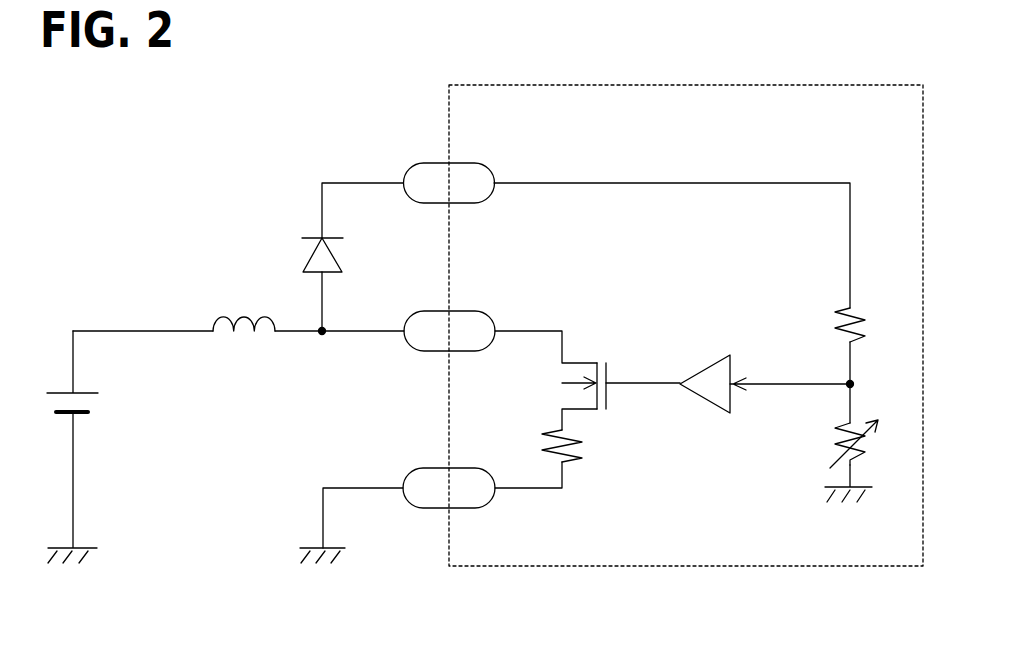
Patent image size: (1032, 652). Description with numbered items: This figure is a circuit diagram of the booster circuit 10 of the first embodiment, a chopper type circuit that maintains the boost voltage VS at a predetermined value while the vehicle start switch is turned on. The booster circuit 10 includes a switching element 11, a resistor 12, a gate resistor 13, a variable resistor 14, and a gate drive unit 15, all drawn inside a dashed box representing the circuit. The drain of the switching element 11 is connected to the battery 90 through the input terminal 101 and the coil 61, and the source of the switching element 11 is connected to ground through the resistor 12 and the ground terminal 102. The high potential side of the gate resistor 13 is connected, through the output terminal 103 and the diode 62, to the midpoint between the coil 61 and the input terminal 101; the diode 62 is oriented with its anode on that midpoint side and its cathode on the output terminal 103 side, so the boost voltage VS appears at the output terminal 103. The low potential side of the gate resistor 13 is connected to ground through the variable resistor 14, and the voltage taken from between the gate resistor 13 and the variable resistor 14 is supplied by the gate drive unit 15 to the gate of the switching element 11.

The booster circuit 10 is at (880, 85).
The switching element 11 is at (590, 362).
The resistor 12 is at (583, 440).
The gate resistor 13 is at (835, 320).
The variable resistor 14 is at (836, 435).
The gate drive unit 15 is at (702, 366).
The coil 61 is at (229, 345).
The diode 62 is at (305, 256).
The battery 90 is at (57, 392).
The input terminal 101 is at (414, 311).
The ground terminal 102 is at (414, 468).
The output terminal 103 is at (413, 163).